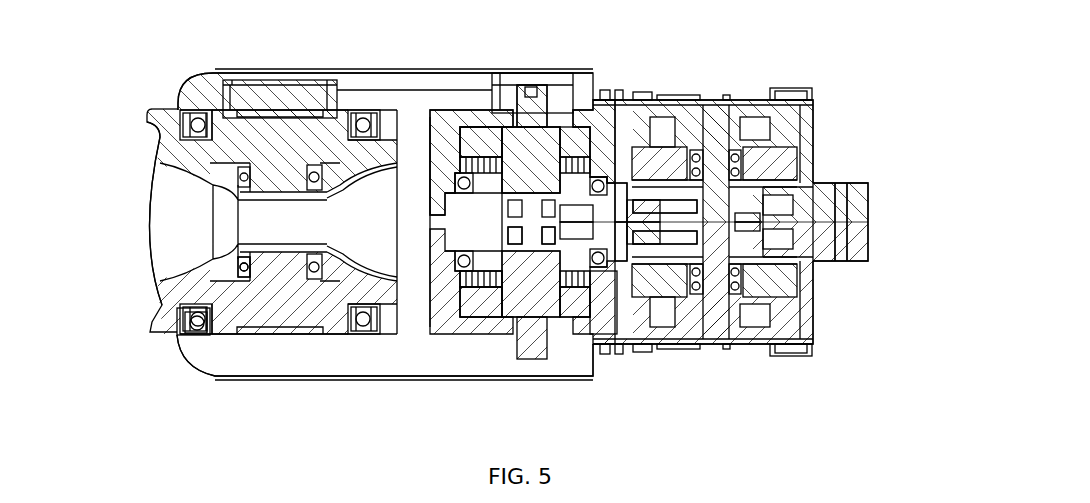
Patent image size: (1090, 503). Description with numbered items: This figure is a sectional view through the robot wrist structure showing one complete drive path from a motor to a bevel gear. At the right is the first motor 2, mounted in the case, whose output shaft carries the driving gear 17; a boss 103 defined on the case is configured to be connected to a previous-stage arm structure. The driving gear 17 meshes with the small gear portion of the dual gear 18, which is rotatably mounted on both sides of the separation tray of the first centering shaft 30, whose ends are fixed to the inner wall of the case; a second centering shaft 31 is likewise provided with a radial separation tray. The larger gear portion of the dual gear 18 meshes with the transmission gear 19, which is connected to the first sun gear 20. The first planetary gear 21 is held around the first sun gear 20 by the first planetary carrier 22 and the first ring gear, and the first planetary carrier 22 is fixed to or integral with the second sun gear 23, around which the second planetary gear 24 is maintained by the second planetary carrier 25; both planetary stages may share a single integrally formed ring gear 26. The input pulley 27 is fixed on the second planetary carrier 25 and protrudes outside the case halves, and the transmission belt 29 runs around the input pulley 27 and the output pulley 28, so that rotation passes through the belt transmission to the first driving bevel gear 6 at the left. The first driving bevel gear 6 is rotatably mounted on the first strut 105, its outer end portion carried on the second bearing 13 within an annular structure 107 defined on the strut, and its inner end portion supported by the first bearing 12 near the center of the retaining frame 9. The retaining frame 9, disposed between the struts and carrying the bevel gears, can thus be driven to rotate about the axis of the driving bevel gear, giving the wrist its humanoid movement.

The first motor 2 is at (760, 287).
The first driving bevel gear 6 is at (288, 300).
The retaining frame 9 is at (178, 212).
The first bearing 12 is at (240, 272).
The second bearing 13 is at (187, 335).
The driving gear 17 is at (800, 193).
The dual gear 18 is at (663, 213).
The transmission gear 19 is at (568, 262).
The first sun gear 20 is at (530, 163).
The first planetary gear 21 is at (475, 282).
The first planetary carrier 22 is at (480, 143).
The second sun gear 23 is at (522, 140).
The second planetary gear 24 is at (456, 138).
The second planetary carrier 25 is at (500, 335).
The ring gear 26 is at (612, 153).
The input pulley 27 is at (556, 97).
The output pulley 28 is at (276, 93).
The transmission belt 29 is at (397, 103).
The first centering shaft 30 is at (622, 226).
The second centering shaft 31 is at (526, 245).
The boss 103 is at (868, 233).
The first strut 105 is at (397, 362).
The annular structure 107 is at (577, 330).